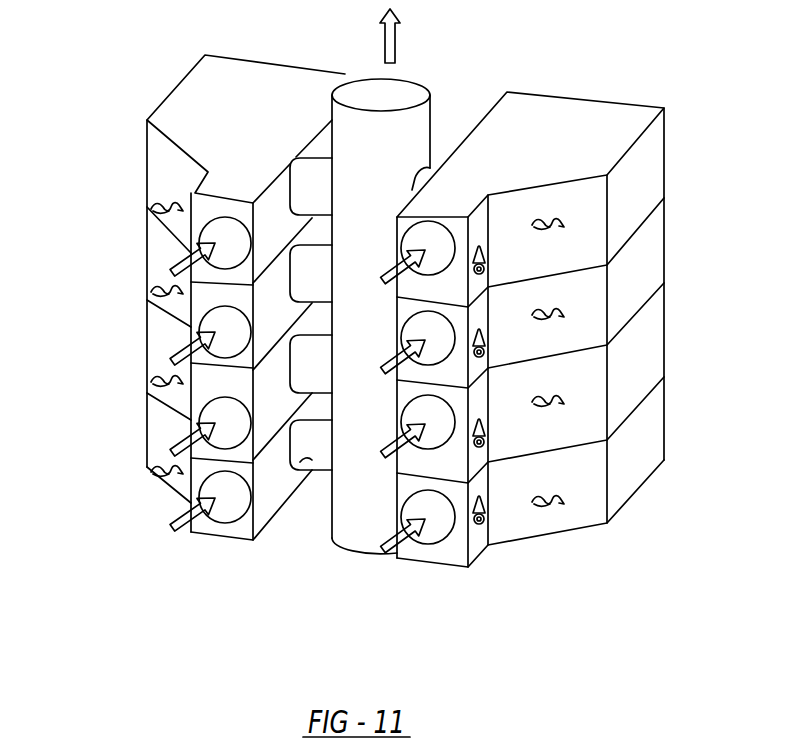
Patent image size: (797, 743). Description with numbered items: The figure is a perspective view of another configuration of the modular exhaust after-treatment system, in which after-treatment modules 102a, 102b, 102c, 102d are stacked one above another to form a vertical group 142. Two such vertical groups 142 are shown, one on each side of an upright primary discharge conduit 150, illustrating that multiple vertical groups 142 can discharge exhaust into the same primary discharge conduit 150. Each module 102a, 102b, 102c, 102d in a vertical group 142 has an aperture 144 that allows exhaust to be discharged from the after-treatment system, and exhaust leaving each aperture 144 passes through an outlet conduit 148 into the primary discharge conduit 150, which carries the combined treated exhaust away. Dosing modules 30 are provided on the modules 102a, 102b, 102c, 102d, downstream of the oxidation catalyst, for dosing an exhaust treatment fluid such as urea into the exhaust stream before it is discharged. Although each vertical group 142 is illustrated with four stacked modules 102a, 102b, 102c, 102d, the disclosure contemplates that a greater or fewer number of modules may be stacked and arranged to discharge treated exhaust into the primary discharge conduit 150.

The dosing module 30 is at (548, 222).
The after-treatment module 102a is at (163, 438).
The after-treatment module 102b is at (162, 342).
The after-treatment module 102c is at (177, 255).
The after-treatment module 102d is at (158, 158).
The vertical group 142 is at (150, 513).
The aperture 144 is at (290, 187).
The outlet conduit 148 is at (432, 165).
The primary discharge conduit 150 is at (345, 548).